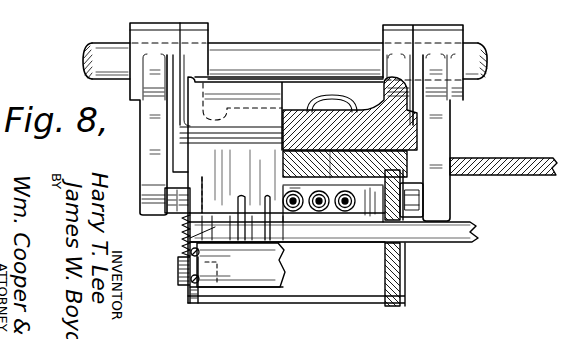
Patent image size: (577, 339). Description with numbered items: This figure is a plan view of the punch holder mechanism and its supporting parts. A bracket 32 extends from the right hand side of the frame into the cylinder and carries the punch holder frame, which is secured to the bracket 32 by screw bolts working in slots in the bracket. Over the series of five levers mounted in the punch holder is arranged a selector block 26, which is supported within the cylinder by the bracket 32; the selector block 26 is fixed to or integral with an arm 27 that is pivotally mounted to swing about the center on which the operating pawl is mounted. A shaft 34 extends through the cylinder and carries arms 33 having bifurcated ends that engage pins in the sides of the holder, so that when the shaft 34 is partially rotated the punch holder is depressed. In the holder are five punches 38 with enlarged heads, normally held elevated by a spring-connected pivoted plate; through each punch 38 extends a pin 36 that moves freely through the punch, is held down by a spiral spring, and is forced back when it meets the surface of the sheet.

The selector block 26 is at (185, 242).
The arm 27 is at (418, 243).
The bracket 32 is at (407, 133).
The arms 33 is at (143, 169).
The shaft 34 is at (470, 50).
The pin 36 is at (319, 211).
The punches 38 is at (437, 197).